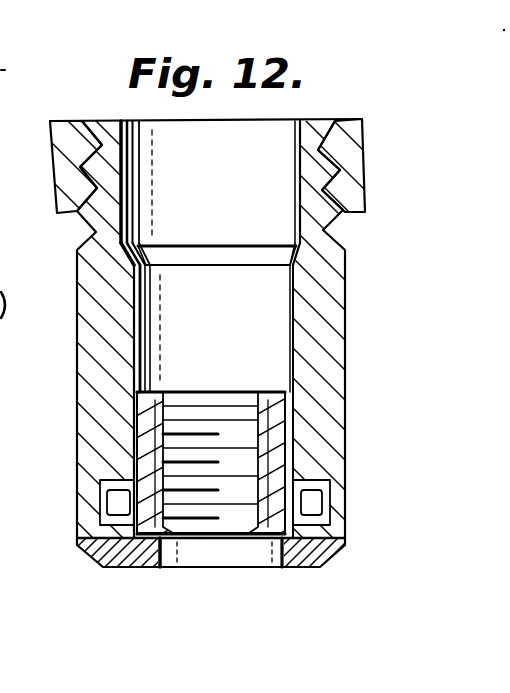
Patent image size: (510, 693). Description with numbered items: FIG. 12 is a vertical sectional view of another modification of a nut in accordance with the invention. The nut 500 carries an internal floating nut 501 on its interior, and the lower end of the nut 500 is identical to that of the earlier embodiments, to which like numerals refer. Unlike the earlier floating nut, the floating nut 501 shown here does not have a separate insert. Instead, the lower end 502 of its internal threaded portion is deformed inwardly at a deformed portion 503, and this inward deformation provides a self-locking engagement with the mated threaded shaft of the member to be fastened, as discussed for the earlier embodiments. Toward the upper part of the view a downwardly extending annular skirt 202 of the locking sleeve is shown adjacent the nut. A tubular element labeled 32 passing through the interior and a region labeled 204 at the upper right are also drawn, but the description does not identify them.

The nut 500 is at (108, 116).
The tube 32 is at (210, 256).
The annular skirt 202 is at (53, 172).
The nut right section 204 is at (382, 106).
The floating nut 501 is at (292, 375).
The lower end 502 is at (161, 569).
The deformed portion 503 is at (285, 569).